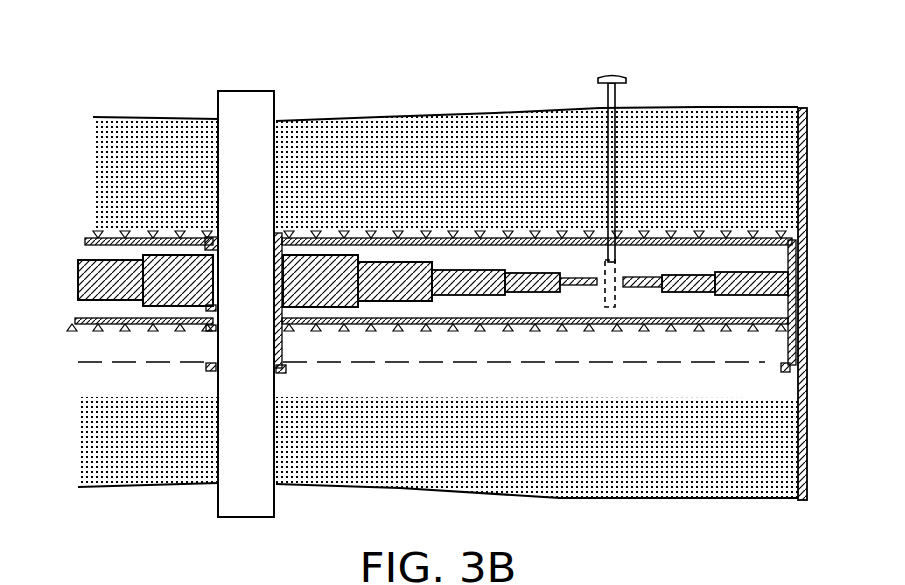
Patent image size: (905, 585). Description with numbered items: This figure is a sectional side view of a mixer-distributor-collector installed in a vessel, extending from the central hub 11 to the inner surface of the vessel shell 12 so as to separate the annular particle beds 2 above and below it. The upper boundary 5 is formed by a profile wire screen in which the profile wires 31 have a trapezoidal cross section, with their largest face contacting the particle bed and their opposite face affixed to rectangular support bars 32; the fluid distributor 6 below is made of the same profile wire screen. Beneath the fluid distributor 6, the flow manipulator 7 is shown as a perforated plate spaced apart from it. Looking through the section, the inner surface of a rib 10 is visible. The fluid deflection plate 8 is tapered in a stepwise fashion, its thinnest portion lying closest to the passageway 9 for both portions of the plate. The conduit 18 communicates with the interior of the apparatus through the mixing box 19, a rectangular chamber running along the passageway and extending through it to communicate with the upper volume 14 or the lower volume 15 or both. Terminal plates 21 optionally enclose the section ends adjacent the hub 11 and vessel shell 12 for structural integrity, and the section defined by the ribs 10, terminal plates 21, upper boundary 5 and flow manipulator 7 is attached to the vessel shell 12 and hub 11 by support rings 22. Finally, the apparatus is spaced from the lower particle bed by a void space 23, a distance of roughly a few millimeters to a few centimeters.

The annular particle beds 2 is at (165, 158).
The hub 11 is at (253, 160).
The upper boundary 5 is at (797, 230).
The fluid distributor 6 is at (771, 340).
The flow manipulator 7 is at (737, 365).
The terminal plates 21 is at (274, 233).
The support rings 22 is at (280, 373).
The fluid deflection plate 8 is at (410, 262).
The upper volume 14 is at (505, 258).
The vessel shell 12 is at (797, 290).
The mixing box 19 is at (605, 262).
The conduit 18 is at (615, 98).
The passageway 9 is at (625, 233).
The profile wires 31 is at (671, 233).
The support bars 32 is at (760, 235).
The void space 23 is at (657, 385).
The lower volume 15 is at (467, 308).
The rib 10 is at (627, 269).